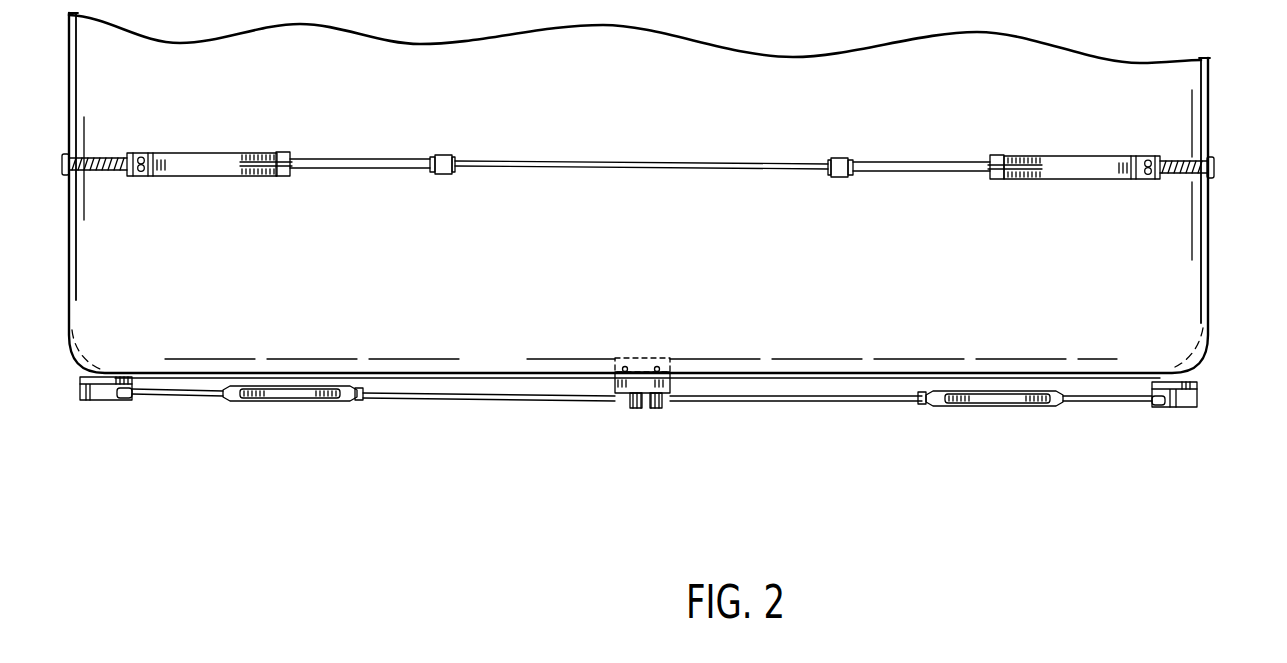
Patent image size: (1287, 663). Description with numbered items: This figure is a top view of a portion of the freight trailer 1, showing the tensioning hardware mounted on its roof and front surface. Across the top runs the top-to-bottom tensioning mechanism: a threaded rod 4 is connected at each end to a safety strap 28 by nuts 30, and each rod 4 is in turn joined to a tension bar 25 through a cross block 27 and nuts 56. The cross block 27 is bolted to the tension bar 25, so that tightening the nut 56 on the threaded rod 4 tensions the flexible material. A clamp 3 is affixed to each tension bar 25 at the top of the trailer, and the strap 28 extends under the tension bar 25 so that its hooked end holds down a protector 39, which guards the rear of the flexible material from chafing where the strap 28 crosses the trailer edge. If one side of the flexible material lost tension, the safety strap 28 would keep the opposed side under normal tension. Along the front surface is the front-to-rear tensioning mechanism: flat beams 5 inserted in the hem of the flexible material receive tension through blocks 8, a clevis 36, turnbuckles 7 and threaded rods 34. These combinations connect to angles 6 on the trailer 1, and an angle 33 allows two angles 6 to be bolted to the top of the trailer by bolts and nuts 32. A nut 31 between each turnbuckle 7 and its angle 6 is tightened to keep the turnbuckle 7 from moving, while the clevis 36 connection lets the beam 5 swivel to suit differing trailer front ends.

The trailer 1 is at (1210, 97).
The clamp 3 is at (129, 155).
The threaded rod 4 is at (562, 170).
The flat beam 5 is at (77, 378).
The angle 6 is at (634, 409).
The turnbuckle 7 is at (292, 405).
The block 8 is at (99, 402).
The tension bar 25 is at (212, 153).
The cross block 27 is at (287, 156).
The safety strap 28 is at (403, 158).
The nut 30 is at (433, 176).
The nut 31 is at (361, 403).
The bolts and nuts 32 is at (620, 372).
The angle 33 is at (643, 358).
The threaded rod 34 is at (806, 403).
The clevis 36 is at (133, 404).
The protector 39 is at (67, 155).
The nut 56 is at (278, 180).